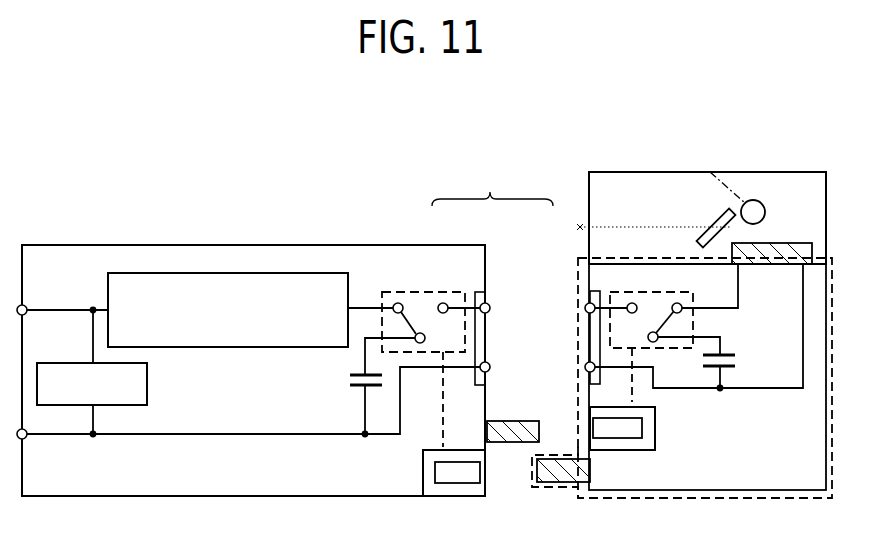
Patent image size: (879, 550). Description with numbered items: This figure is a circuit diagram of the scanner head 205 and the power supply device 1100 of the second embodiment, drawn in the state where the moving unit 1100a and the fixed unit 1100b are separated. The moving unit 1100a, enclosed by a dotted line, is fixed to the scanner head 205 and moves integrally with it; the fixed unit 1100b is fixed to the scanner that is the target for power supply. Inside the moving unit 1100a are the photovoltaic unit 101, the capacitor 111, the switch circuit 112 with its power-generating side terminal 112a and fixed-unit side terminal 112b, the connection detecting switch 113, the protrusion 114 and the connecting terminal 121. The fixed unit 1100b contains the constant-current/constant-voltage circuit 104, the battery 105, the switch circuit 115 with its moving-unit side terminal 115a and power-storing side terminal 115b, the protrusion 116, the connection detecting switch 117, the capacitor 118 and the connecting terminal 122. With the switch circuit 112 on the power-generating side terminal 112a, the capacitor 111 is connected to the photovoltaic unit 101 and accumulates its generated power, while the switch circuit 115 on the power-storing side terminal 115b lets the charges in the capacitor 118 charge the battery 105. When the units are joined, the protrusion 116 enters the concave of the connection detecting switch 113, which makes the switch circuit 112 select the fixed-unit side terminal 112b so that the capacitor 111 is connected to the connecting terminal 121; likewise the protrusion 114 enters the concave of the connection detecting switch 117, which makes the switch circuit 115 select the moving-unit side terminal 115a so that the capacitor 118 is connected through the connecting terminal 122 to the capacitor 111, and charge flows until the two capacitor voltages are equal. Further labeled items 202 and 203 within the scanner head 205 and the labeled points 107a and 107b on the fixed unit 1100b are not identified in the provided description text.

The power supply device 1100 is at (492, 186).
The moving unit 1100a is at (564, 259).
The fixed unit 1100b is at (443, 244).
The power terminal 107a is at (26, 306).
The ground terminal 107b is at (26, 438).
The battery 105 is at (148, 383).
The constant-current/constant-voltage circuit 104 is at (259, 349).
The capacitor 118 is at (356, 387).
The switch circuit 115 is at (424, 356).
The moving-unit side terminal 115a is at (443, 302).
The power-storing side terminal 115b is at (398, 302).
The connecting terminal 122 is at (490, 305).
The connection detecting switch 117 is at (423, 473).
The protrusion 116 is at (508, 443).
The protrusion 114 is at (555, 488).
The connecting terminal 121 is at (585, 371).
The connection detecting switch 113 is at (656, 428).
The capacitor 111 is at (735, 370).
The switch circuit 112 is at (700, 322).
The power-generating side terminal 112a is at (677, 302).
The fixed-unit side terminal 112b is at (632, 302).
The photovoltaic unit 101 is at (797, 243).
The lens 202 is at (755, 200).
The mirror 203 is at (716, 210).
The scanner head 205 is at (592, 172).